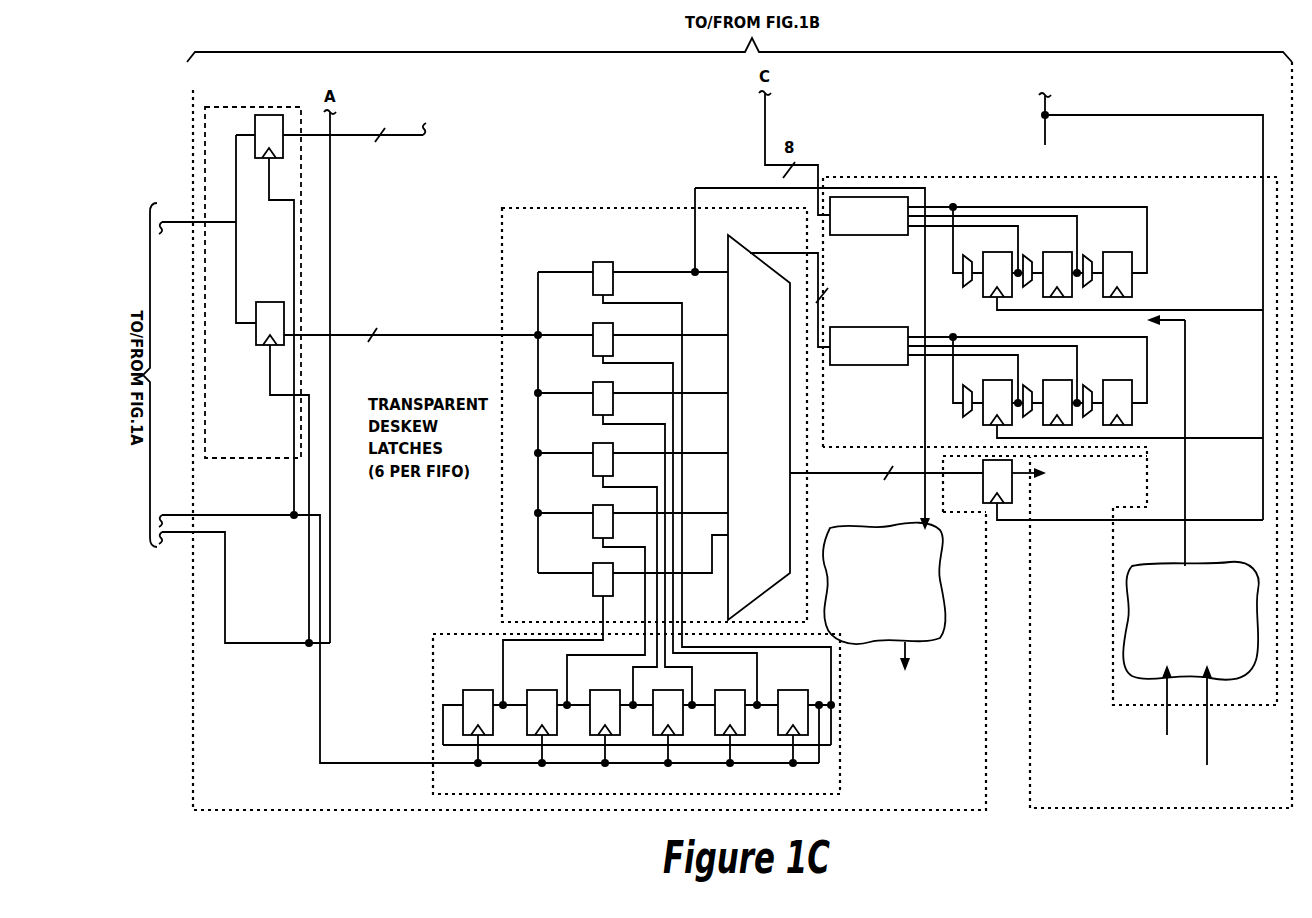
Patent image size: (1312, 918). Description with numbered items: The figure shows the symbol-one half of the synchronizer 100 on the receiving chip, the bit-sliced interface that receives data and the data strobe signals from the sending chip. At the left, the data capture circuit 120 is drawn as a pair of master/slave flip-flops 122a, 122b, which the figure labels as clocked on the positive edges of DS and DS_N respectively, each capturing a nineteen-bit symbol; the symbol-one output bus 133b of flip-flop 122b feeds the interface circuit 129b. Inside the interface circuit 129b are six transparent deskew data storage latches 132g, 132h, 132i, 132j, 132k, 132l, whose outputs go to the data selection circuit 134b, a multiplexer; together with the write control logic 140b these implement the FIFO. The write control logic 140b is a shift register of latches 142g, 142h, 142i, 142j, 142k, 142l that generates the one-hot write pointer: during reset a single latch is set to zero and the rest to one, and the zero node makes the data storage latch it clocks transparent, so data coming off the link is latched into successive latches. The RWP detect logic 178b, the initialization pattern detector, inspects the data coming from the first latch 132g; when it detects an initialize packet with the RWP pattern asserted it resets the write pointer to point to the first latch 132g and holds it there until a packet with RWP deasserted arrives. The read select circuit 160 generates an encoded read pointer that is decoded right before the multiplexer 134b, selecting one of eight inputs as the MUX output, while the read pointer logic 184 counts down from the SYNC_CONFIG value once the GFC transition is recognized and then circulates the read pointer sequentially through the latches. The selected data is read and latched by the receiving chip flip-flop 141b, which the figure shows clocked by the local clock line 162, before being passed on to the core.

The synchronizer 100 is at (191, 133).
The data capture circuit 120 is at (285, 107).
The master/slave flip-flop (symbol 0) 122a is at (258, 114).
The master/slave flip-flop (symbol 1) 122b is at (256, 340).
The interface circuit 129b is at (502, 220).
The data storage latch 132g is at (598, 262).
The data storage latch 132h is at (598, 323).
The data storage latch 132i is at (598, 382).
The data storage latch 132j is at (598, 443).
The data storage latch 132k is at (598, 505).
The data storage latch 132l is at (598, 563).
The symbol 1 data bus 133b is at (428, 333).
The data selection circuit 134b is at (789, 429).
The write control logic 140b is at (488, 634).
The receiving chip flip flop 141b is at (963, 459).
The write control logic data storage latch 142g is at (806, 664).
The write control logic data storage latch 142h is at (742, 664).
The write control logic data storage latch 142i is at (680, 680).
The write control logic data storage latch 142j is at (615, 672).
The write control logic data storage latch 142k is at (555, 664).
The write control logic data storage latch 142l is at (478, 689).
The read select circuit 160 is at (1205, 177).
The posedge clk 250 clock line 162 is at (1050, 113).
The RWP detect logic circuit 178b is at (933, 640).
The read pointer logic 184 is at (1225, 562).